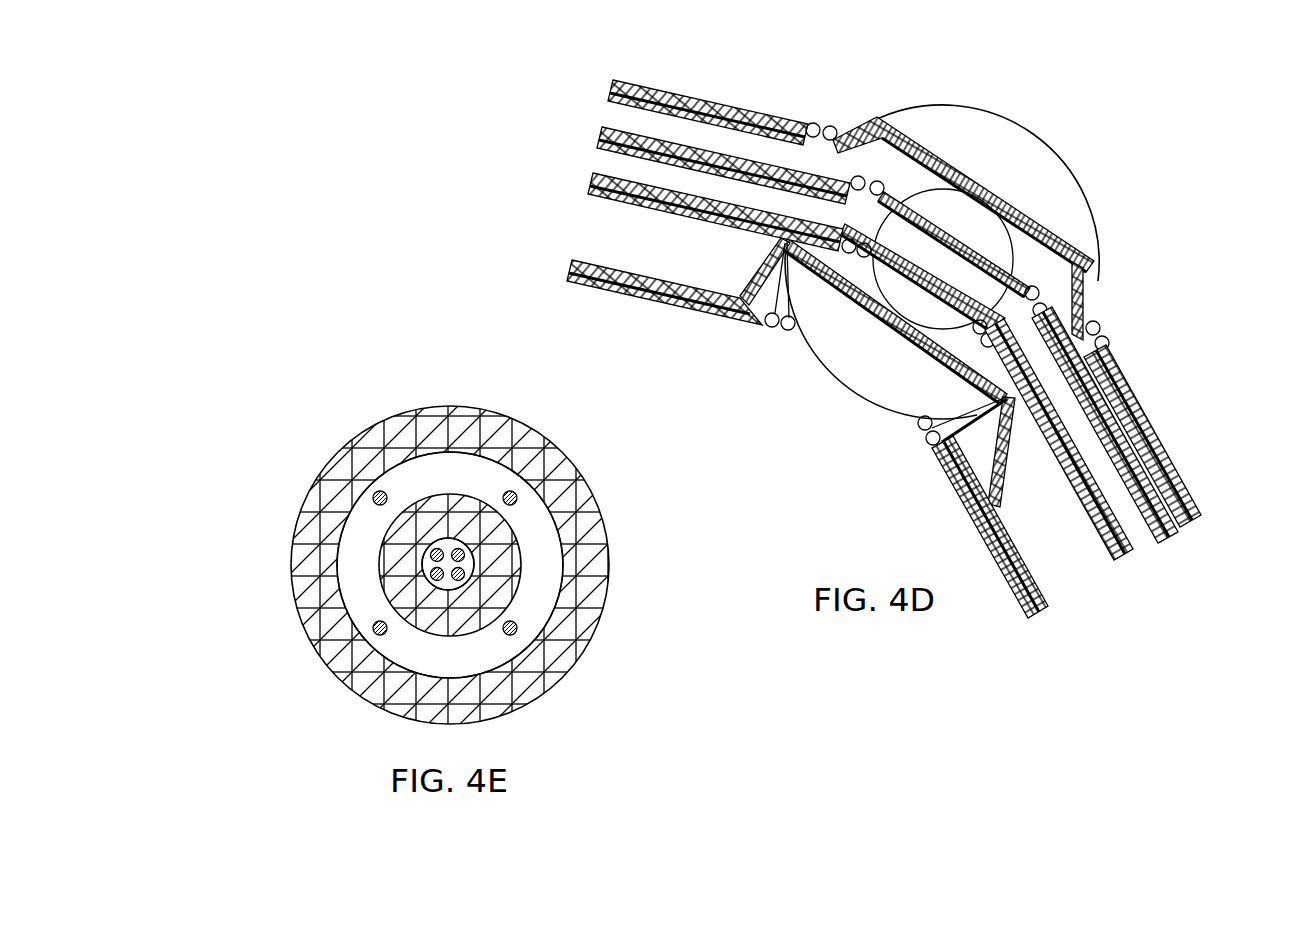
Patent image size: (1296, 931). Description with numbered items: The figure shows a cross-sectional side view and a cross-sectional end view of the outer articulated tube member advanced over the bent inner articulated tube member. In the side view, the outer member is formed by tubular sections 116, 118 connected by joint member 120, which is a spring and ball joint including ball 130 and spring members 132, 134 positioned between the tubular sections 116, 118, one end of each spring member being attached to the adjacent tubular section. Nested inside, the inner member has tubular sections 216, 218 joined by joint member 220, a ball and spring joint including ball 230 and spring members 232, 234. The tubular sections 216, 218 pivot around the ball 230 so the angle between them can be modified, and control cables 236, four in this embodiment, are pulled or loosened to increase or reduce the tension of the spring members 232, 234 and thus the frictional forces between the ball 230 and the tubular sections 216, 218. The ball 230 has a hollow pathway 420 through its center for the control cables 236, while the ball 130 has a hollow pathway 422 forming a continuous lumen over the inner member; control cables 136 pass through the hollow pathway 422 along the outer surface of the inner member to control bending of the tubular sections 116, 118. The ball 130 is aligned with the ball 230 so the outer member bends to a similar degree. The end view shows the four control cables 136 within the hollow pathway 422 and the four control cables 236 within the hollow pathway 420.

In FIG. 4D, the tubular section 116 is at (692, 96).
In FIG. 4D, the tubular section 118 is at (1150, 407).
In FIG. 4D, the joint member 120 is at (1094, 128).
In FIG. 4D, the ball 130 is at (986, 167).
In FIG. 4E, the ball 130 is at (522, 428).
In FIG. 4D, the spring member 132 is at (815, 123).
In FIG. 4D, the spring member 134 is at (1108, 327).
In FIG. 4D, the control cables 136 is at (1048, 607).
In FIG. 4E, the control cables 136 is at (517, 497).
In FIG. 4D, the tubular section 216 is at (625, 131).
In FIG. 4D, the tubular section 218 is at (1177, 533).
In FIG. 4D, the joint member 220 is at (1036, 273).
In FIG. 4D, the ball 230 is at (983, 229).
In FIG. 4E, the ball 230 is at (521, 560).
In FIG. 4D, the spring member 232 is at (860, 176).
In FIG. 4D, the spring member 234 is at (1047, 292).
In FIG. 4D, the control cables 236 is at (1158, 540).
In FIG. 4E, the control cables 236 is at (464, 577).
In FIG. 4E, the hollow pathway 420 is at (423, 568).
In FIG. 4E, the hollow pathway 422 is at (432, 481).